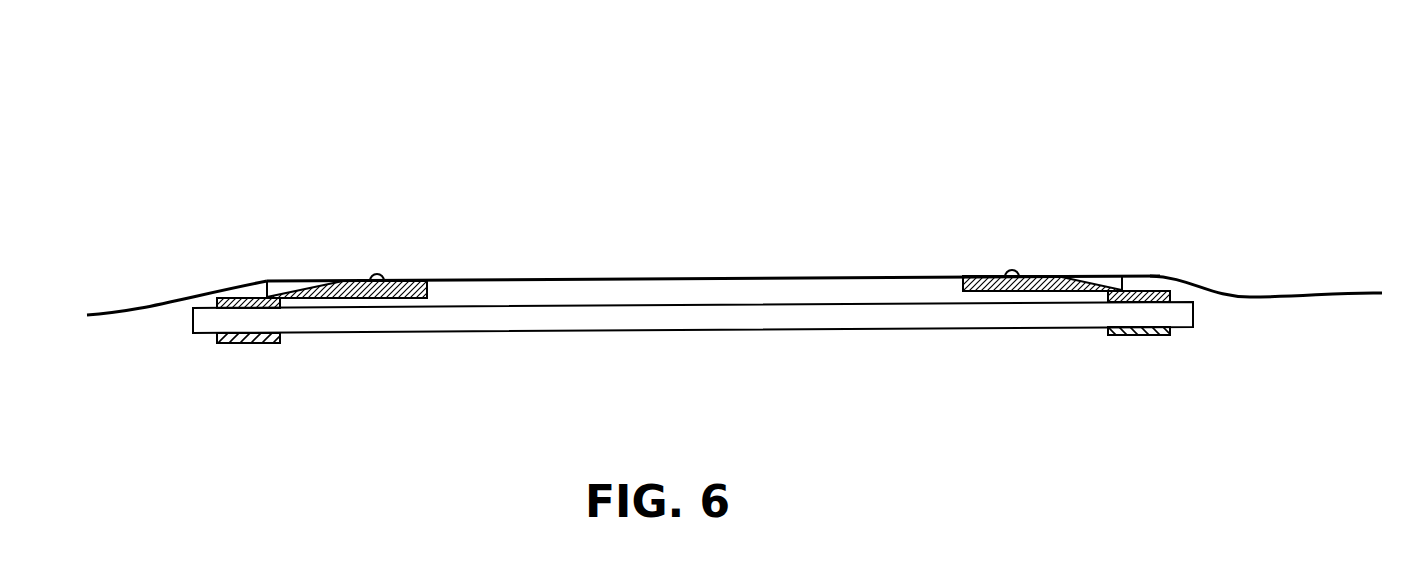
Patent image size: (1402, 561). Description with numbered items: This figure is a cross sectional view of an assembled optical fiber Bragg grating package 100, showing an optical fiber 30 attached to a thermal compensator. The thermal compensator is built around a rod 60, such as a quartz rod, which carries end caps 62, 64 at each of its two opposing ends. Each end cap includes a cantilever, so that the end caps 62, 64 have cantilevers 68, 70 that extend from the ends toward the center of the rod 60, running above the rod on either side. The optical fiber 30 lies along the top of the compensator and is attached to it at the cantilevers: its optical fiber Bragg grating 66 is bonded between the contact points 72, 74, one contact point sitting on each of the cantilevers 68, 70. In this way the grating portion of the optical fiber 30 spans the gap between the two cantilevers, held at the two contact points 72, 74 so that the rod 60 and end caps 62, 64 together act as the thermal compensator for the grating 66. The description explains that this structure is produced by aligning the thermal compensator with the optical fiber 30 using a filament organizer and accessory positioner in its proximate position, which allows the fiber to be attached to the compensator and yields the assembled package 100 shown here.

The optical fiber Bragg grating package 100 is at (1108, 106).
The optical fiber 30 is at (902, 275).
The rod 60 is at (965, 327).
The end cap 62 is at (1135, 270).
The end cap 64 is at (300, 275).
The optical fiber Bragg grating 66 is at (633, 278).
The cantilever 68 is at (1055, 275).
The cantilever 70 is at (347, 290).
The contact point 72 is at (1012, 270).
The contact point 74 is at (377, 273).